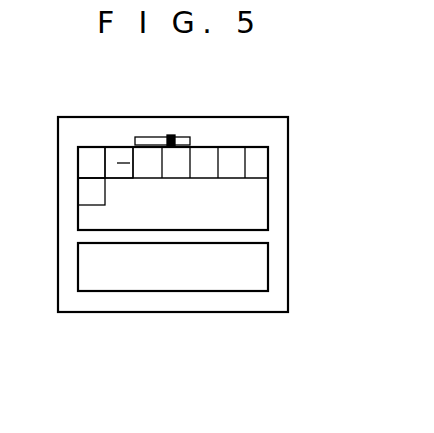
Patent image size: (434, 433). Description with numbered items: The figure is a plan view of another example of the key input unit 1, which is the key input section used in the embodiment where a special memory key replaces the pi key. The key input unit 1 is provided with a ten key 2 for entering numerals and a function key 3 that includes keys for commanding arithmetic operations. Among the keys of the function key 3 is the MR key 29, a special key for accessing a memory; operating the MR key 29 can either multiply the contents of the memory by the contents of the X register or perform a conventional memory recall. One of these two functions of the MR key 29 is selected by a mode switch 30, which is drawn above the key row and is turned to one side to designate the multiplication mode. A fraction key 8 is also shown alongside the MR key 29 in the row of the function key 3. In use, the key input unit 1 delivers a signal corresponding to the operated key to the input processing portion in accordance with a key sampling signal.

The key input unit 1 is at (287, 314).
The ten key 2 is at (267, 280).
The function key 3 is at (263, 220).
The fraction key (a b/c) 8 is at (113, 147).
The MR key 29 is at (85, 147).
The mode switch 30 is at (193, 140).